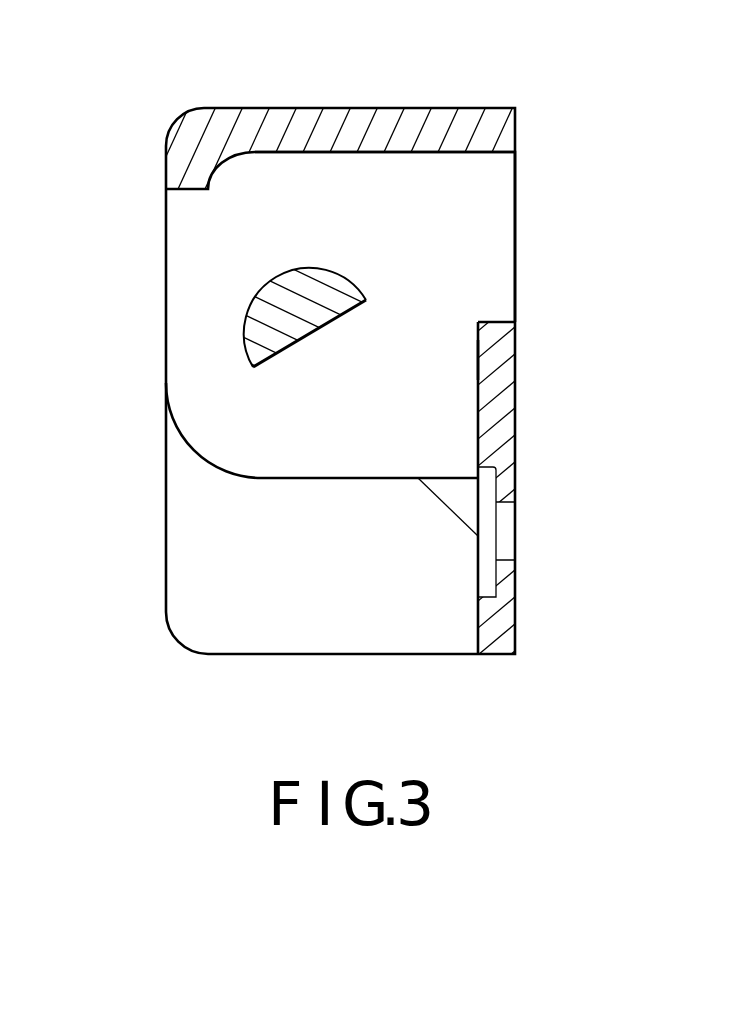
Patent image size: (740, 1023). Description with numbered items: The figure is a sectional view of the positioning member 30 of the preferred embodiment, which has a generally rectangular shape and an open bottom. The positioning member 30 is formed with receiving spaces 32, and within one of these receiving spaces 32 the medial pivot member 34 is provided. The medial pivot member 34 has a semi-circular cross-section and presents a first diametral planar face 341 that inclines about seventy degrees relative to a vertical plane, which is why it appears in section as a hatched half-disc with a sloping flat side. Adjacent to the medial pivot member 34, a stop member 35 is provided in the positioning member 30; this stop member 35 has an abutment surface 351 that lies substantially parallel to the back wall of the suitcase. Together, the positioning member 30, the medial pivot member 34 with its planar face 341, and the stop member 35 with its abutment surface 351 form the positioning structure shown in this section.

The positioning member 30 is at (400, 106).
The receiving space 32 is at (480, 232).
The medial pivot member 34 is at (263, 287).
The first diametral planar face 341 is at (307, 343).
The stop member 35 is at (495, 388).
The abutment surface 351 is at (478, 359).